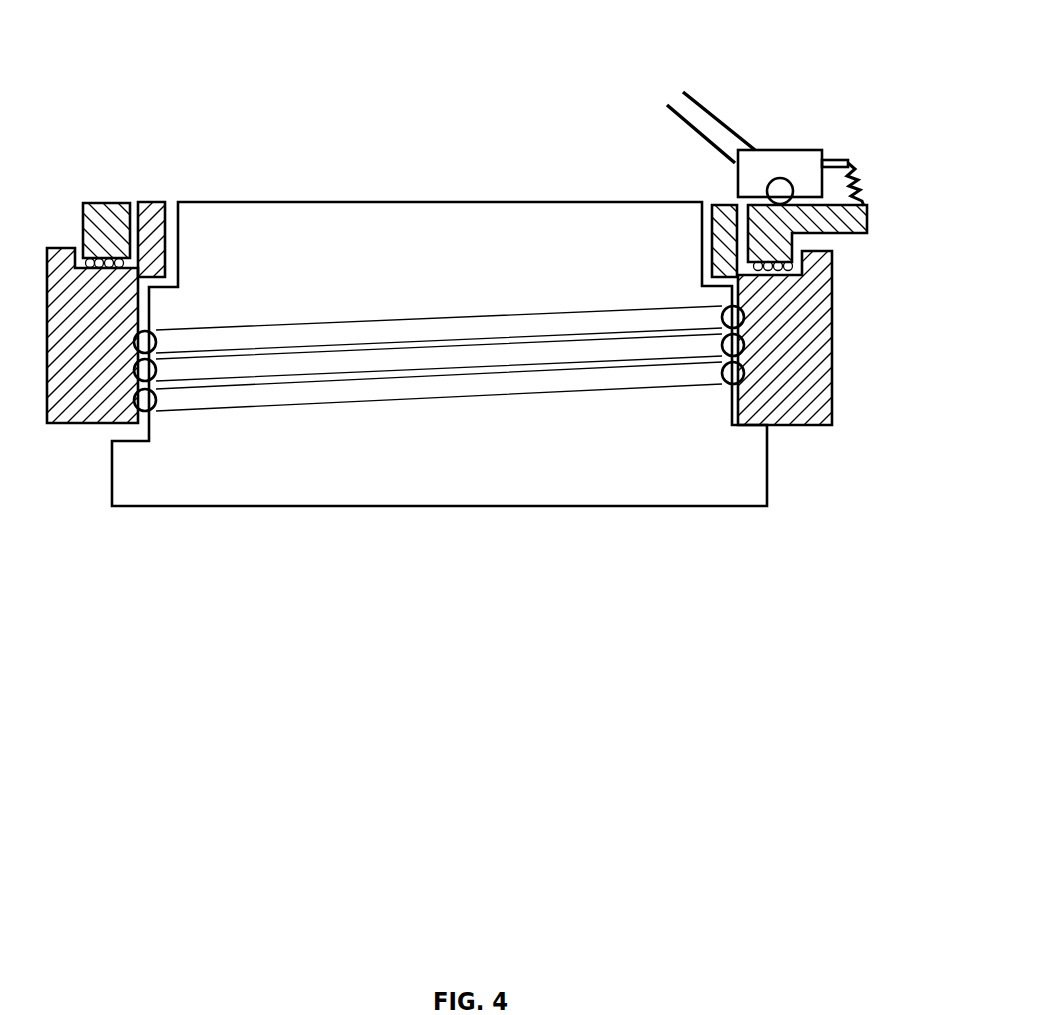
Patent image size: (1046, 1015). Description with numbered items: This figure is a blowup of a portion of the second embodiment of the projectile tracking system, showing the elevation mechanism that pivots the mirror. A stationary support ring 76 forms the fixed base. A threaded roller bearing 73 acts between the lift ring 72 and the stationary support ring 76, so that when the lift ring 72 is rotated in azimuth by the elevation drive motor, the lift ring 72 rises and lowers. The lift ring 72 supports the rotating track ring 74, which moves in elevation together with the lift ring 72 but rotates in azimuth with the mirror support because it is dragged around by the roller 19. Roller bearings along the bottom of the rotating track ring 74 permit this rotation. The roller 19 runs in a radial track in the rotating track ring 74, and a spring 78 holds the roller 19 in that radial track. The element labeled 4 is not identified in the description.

The light beam 4 is at (683, 92).
The roller 19 is at (782, 180).
The lift ring 72 is at (807, 347).
The threaded roller bearing 73 is at (730, 391).
The rotating track ring 74 is at (112, 203).
The stationary support ring 76 is at (733, 468).
The spring 78 is at (862, 182).